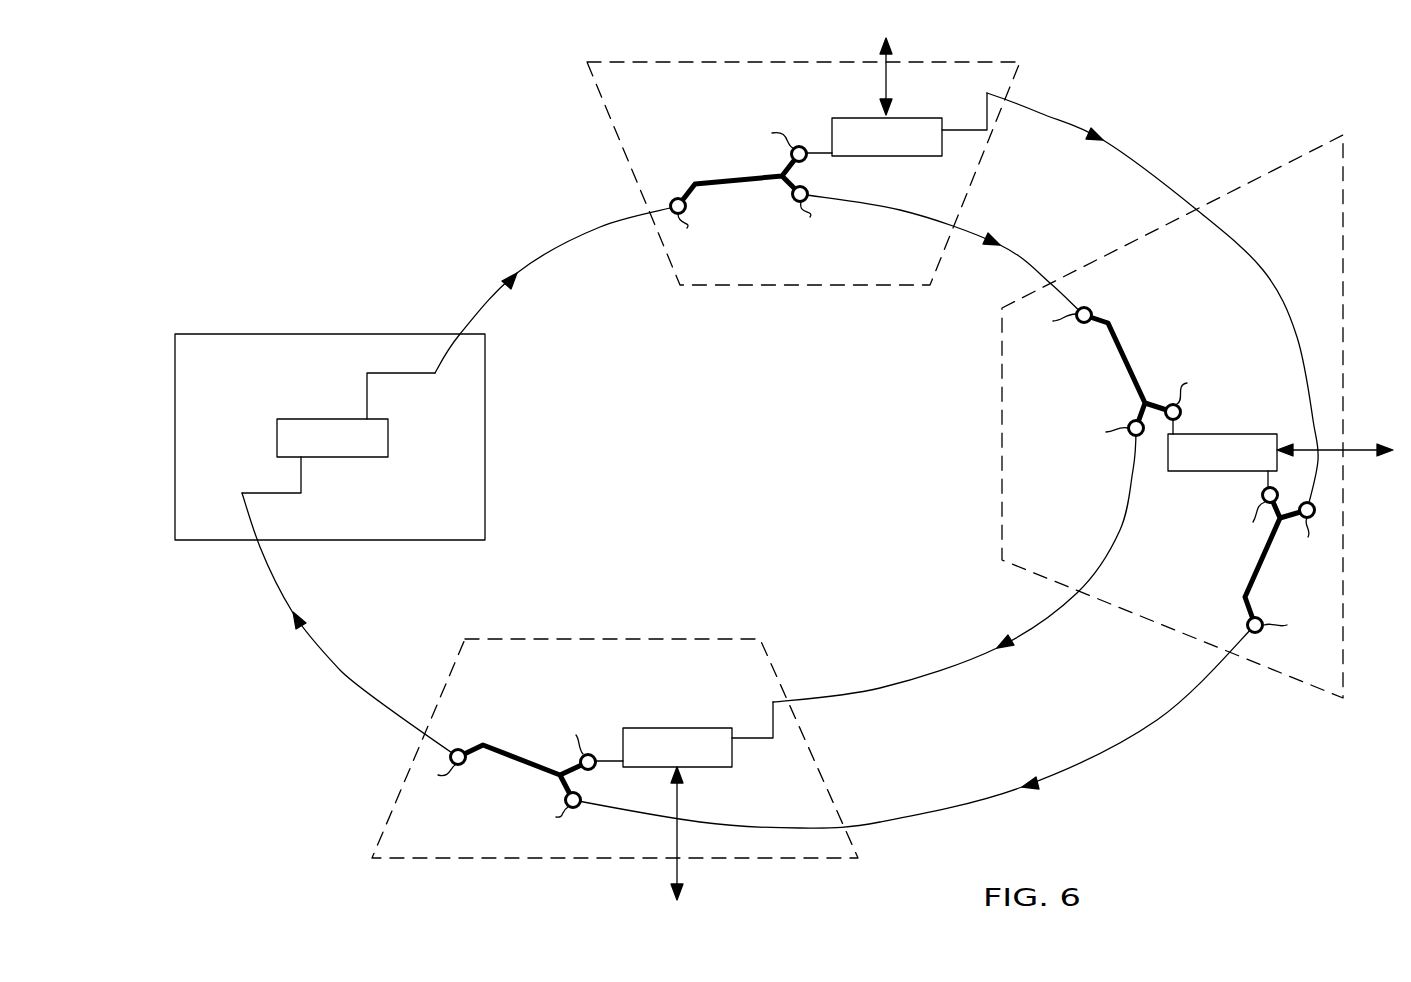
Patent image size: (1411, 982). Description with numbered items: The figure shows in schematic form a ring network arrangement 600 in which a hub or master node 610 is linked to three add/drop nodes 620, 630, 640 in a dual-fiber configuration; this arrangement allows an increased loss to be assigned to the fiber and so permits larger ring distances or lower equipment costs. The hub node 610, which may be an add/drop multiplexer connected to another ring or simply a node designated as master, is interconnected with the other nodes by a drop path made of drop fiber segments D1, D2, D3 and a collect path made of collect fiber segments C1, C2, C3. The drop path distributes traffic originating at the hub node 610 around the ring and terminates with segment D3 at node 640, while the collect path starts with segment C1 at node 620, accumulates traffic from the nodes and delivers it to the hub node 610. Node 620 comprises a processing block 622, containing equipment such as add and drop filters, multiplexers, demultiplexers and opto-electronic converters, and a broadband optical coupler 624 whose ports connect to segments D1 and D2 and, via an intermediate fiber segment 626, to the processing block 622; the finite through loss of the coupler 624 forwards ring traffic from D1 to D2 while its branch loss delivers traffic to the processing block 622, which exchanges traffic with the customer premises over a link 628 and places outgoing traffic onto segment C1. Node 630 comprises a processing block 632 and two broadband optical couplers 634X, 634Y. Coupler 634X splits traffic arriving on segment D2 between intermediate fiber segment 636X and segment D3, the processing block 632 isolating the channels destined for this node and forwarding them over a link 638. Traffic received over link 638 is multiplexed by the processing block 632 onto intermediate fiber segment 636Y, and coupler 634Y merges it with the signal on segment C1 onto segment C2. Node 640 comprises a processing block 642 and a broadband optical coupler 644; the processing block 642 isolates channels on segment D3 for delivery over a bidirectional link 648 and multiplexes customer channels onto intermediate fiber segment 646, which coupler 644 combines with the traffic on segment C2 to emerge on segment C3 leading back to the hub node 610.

The network arrangement 600 is at (300, 162).
The hub node 610 is at (434, 535).
The add/drop node 620 is at (866, 278).
The processing block 622 is at (868, 150).
The broadband optical coupler 624 is at (735, 192).
The intermediate fiber segment 626 is at (820, 148).
The link 628 is at (886, 76).
The add/drop node 630 is at (1016, 553).
The processing block 632 is at (1203, 465).
The broadband optical coupler 634X is at (1133, 362).
The broadband optical coupler 634Y is at (1257, 562).
The intermediate fiber segment 636X is at (1184, 422).
The intermediate fiber segment 636Y is at (1260, 477).
The link 638 is at (1367, 450).
The add/drop node 640 is at (721, 670).
The processing block 642 is at (658, 761).
The broadband optical coupler 644 is at (502, 755).
The intermediate fiber segment 646 is at (617, 758).
The bidirectional link 648 is at (677, 865).
The collect fiber segment C1 is at (1076, 134).
The collect fiber segment C2 is at (1040, 782).
The collect fiber segment C3 is at (303, 632).
The drop fiber segment D1 is at (583, 237).
The drop fiber segment D2 is at (963, 245).
The drop fiber segment D3 is at (950, 670).